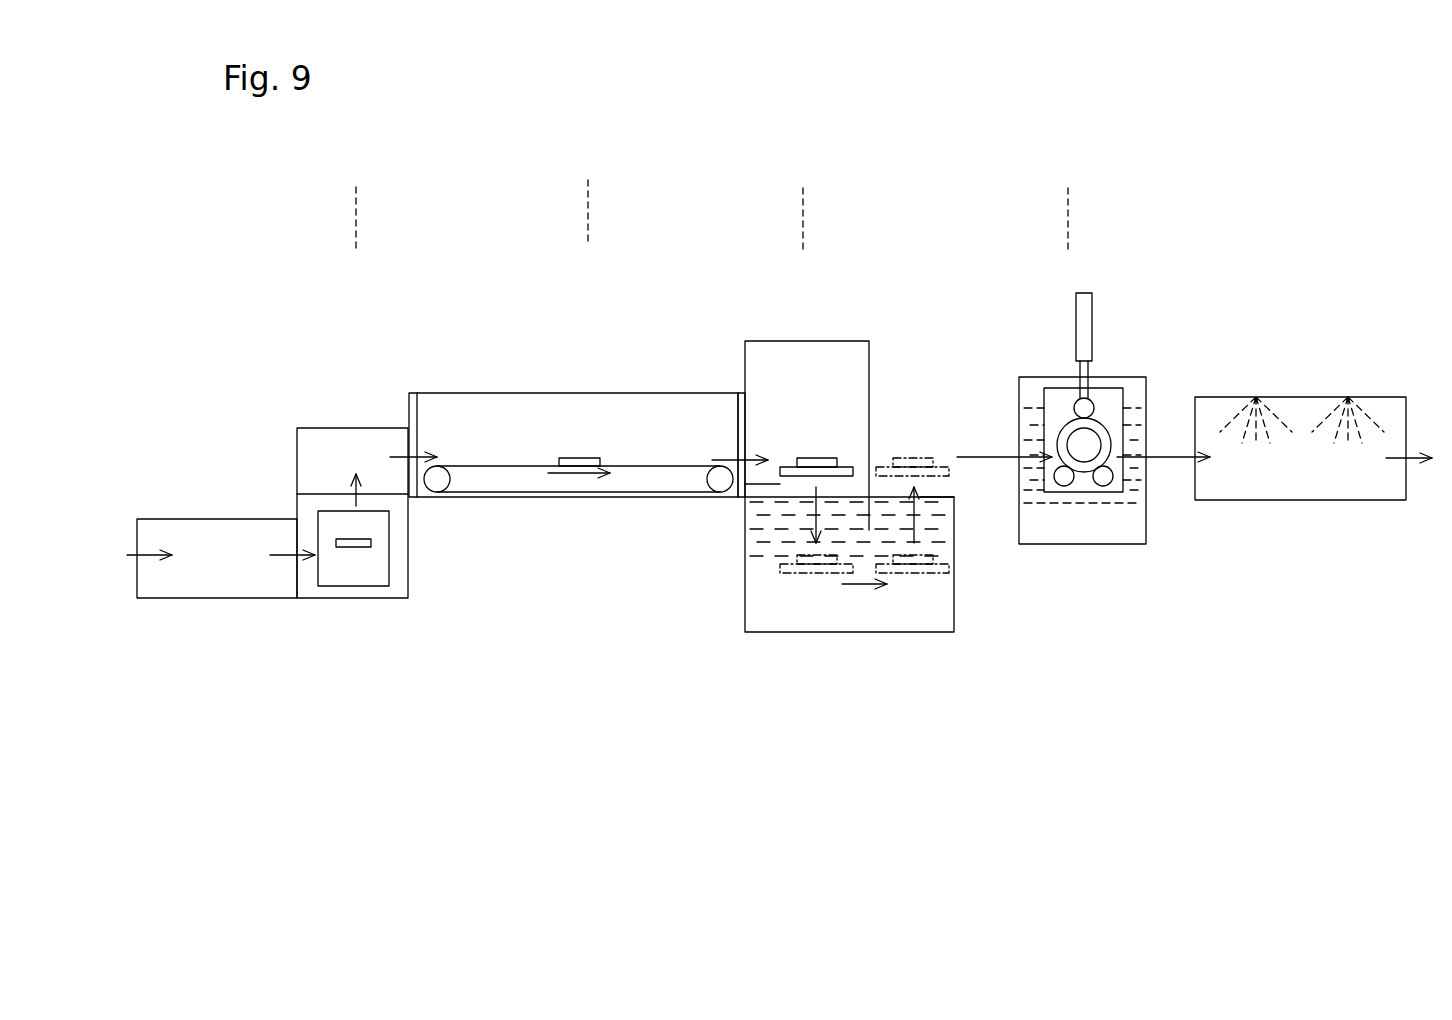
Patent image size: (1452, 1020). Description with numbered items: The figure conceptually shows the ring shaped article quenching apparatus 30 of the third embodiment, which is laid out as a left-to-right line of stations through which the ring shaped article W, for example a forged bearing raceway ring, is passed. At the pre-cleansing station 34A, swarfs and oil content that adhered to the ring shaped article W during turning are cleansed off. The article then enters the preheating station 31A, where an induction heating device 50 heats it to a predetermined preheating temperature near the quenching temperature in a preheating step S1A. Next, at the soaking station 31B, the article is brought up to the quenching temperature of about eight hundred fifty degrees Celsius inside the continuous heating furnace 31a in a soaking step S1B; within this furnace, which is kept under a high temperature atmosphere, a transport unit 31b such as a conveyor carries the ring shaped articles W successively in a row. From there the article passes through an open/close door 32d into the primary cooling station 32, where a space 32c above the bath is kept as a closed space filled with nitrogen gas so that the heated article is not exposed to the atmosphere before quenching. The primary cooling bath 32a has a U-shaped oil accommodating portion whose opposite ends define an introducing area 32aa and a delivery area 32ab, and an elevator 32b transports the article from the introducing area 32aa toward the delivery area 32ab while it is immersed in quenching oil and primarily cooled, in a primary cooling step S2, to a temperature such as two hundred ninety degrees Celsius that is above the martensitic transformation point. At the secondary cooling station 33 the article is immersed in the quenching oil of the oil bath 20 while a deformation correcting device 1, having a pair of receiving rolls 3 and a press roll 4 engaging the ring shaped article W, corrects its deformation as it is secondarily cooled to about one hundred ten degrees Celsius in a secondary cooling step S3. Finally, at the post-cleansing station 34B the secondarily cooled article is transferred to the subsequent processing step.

The ring shaped article quenching apparatus 30 is at (940, 193).
The pre-cleansing station 34A is at (207, 473).
The preheating station 31A is at (332, 412).
The induction heating device 50 is at (373, 573).
The ring shaped article W is at (350, 548).
The soaking station 31B is at (545, 362).
The continuous heating furnace 31a is at (497, 392).
The transport unit 31b is at (526, 493).
The primary cooling station 32 is at (841, 326).
The open/close door 32d is at (742, 408).
The space 32c is at (854, 374).
The elevator 32b is at (840, 475).
The primary cooling bath 32a is at (822, 632).
The introducing area 32aa is at (772, 484).
The delivery area 32ab is at (940, 492).
The secondary cooling station 33 is at (1131, 330).
The oil bath 20 is at (1147, 525).
The deformation correcting device 1 is at (1043, 404).
The press roll 4 is at (1086, 408).
The receiving rolls 3 is at (1063, 481).
The post-cleansing station 34B is at (1309, 366).
The preheating step S1A is at (366, 200).
The soaking step S1B is at (599, 193).
The primary cooling step S2 is at (806, 199).
The secondary cooling step S3 is at (1072, 199).